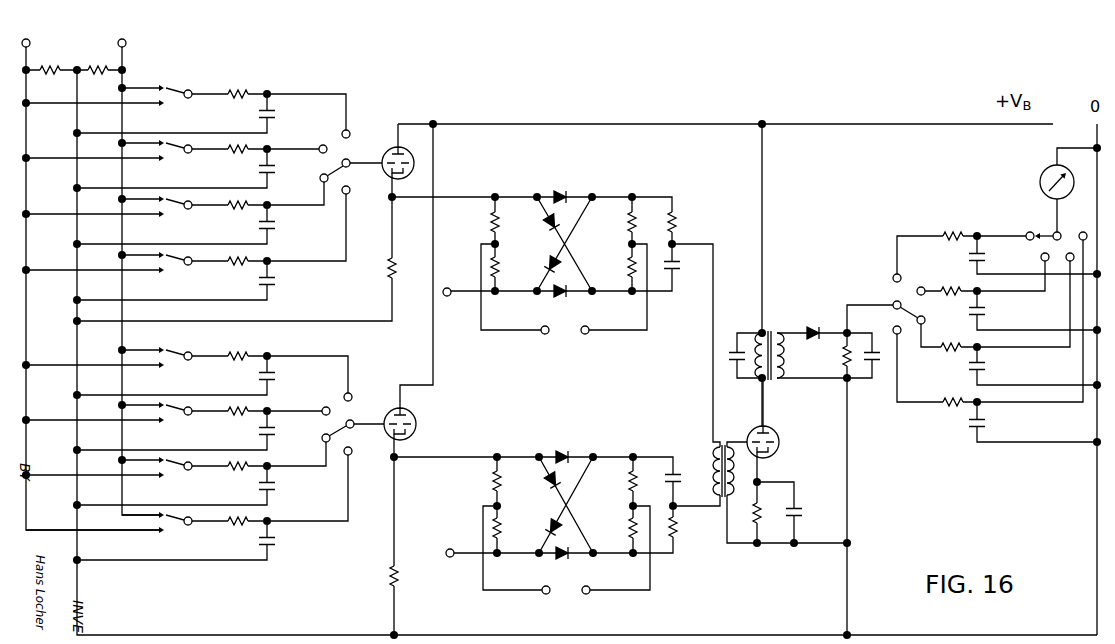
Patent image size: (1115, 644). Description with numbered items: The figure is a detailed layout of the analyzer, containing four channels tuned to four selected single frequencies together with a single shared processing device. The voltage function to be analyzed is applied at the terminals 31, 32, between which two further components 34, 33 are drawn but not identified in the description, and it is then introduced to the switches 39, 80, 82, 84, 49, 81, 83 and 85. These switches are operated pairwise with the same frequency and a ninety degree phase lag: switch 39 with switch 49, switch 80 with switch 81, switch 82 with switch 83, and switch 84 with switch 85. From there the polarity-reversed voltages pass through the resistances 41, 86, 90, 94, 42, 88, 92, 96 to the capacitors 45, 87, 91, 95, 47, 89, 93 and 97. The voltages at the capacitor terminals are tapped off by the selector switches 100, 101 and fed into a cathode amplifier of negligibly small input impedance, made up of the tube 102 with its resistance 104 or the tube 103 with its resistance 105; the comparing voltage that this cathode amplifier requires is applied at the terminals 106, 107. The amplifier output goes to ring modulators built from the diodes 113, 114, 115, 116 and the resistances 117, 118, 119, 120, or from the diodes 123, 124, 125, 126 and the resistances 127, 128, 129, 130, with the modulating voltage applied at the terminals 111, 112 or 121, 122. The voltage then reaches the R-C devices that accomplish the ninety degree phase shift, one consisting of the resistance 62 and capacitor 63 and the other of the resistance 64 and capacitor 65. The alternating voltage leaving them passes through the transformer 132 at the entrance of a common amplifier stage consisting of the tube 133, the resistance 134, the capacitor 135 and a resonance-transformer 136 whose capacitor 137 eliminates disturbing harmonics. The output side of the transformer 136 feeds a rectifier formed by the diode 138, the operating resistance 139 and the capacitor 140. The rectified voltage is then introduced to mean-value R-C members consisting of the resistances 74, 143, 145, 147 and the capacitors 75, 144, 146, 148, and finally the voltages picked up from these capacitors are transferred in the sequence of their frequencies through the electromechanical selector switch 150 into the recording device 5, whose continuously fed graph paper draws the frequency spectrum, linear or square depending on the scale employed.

The terminal 32 is at (84, 273).
The terminal 31 is at (133, 265).
The resistor 34 is at (49, 60).
The resistor 33 is at (98, 60).
The switch 39 is at (113, 104).
The resistance 41 is at (227, 107).
The capacitor 45 is at (276, 114).
The switch 80 is at (113, 159).
The resistance 86 is at (227, 162).
The capacitor 87 is at (276, 169).
The switch 82 is at (113, 215).
The resistance 90 is at (227, 218).
The capacitor 91 is at (276, 225).
The switch 84 is at (113, 271).
The resistance 94 is at (227, 274).
The capacitor 95 is at (276, 281).
The selector switch 100 is at (351, 162).
The tube 102 is at (395, 146).
The resistance 104 is at (388, 268).
The switch 49 is at (113, 366).
The resistance 42 is at (227, 369).
The capacitor 47 is at (276, 376).
The switch 81 is at (113, 421).
The resistance 88 is at (227, 424).
The capacitor 89 is at (276, 431).
The switch 83 is at (113, 476).
The resistance 92 is at (227, 479).
The capacitor 93 is at (276, 486).
The switch 85 is at (113, 531).
The resistance 96 is at (227, 534).
The capacitor 97 is at (276, 541).
The selector switch 101 is at (355, 428).
The tube 103 is at (414, 419).
The resistance 105 is at (390, 576).
The diode 113 is at (561, 189).
The diode 114 is at (546, 223).
The diode 115 is at (546, 265).
The diode 116 is at (561, 298).
The resistance 117 is at (488, 222).
The resistance 118 is at (488, 267).
The resistance 119 is at (619, 222).
The resistance 120 is at (619, 267).
The resistance 62 is at (677, 222).
The capacitor 63 is at (681, 265).
The terminal 106 is at (448, 296).
The terminal 111 is at (545, 334).
The terminal 112 is at (585, 334).
The diode 123 is at (563, 449).
The diode 124 is at (546, 481).
The diode 125 is at (546, 528).
The diode 126 is at (563, 560).
The resistance 127 is at (492, 481).
The resistance 128 is at (490, 528).
The resistance 129 is at (628, 481).
The resistance 130 is at (617, 528).
The resistance 64 is at (682, 478).
The capacitor 65 is at (678, 527).
The terminal 107 is at (451, 557).
The terminal 121 is at (546, 594).
The terminal 122 is at (586, 594).
The transformer 132 is at (712, 452).
The tube 133 is at (779, 440).
The resistance 134 is at (773, 514).
The capacitor 135 is at (802, 512).
The resonance-transformer 136 is at (766, 381).
The capacitor 137 is at (729, 356).
The diode 138 is at (814, 326).
The operating resistance 139 is at (832, 355).
The capacitor 140 is at (874, 364).
The resistance 74 is at (953, 231).
The capacitor 75 is at (986, 257).
The resistance 143 is at (951, 286).
The capacitor 144 is at (986, 311).
The resistance 145 is at (951, 342).
The capacitor 146 is at (986, 366).
The resistance 147 is at (953, 397).
The capacitor 148 is at (986, 423).
The electro mechanical selector switch 150 is at (1044, 232).
The recording device 5 is at (1044, 173).